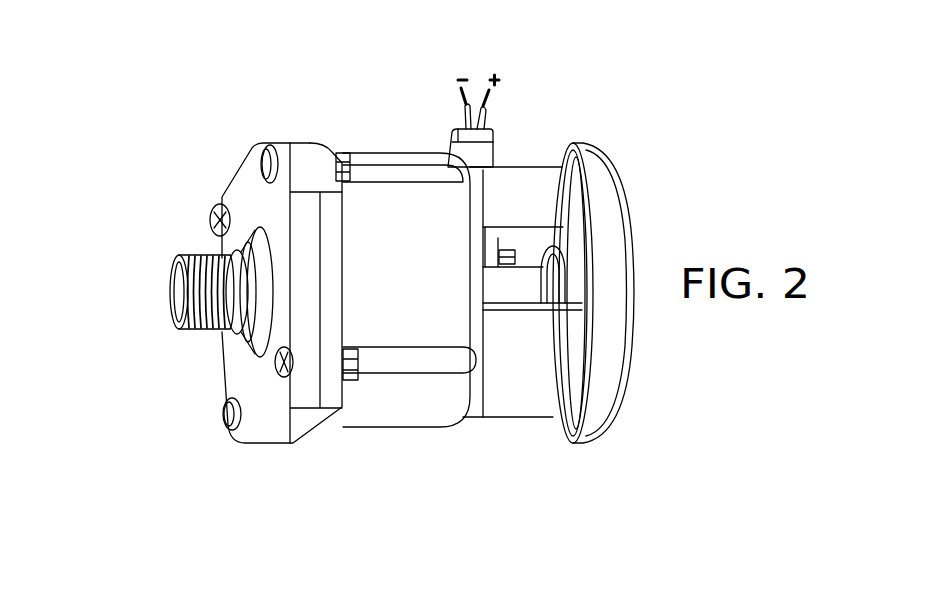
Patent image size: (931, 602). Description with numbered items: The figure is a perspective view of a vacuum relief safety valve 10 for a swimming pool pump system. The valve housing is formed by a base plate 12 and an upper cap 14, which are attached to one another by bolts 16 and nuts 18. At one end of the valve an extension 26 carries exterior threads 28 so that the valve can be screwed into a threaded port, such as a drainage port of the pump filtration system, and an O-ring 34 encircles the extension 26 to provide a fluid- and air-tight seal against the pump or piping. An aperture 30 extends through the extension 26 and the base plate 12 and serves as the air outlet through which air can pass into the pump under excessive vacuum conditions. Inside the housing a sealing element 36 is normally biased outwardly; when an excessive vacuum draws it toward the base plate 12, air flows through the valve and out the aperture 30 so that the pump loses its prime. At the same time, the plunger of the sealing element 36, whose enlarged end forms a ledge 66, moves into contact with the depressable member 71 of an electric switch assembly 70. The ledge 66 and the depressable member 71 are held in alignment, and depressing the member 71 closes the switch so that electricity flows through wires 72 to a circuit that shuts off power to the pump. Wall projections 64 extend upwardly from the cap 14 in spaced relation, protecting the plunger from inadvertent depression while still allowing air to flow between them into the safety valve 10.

The vacuum relief safety valve 10 is at (672, 220).
The base plate 12 is at (245, 443).
The upper cap 14 is at (424, 428).
The bolts 16 is at (263, 143).
The nuts 18 is at (337, 157).
The extension 26 is at (205, 257).
The exterior threads 28 is at (220, 333).
The aperture 30 is at (173, 290).
The O-ring 34 is at (228, 347).
The sealing element 36 is at (515, 290).
The wall projections 64 is at (515, 383).
The ledge 66 is at (527, 237).
The electric switch assembly 70 is at (489, 127).
The depressable member 71 is at (505, 258).
The wires 72 is at (477, 78).